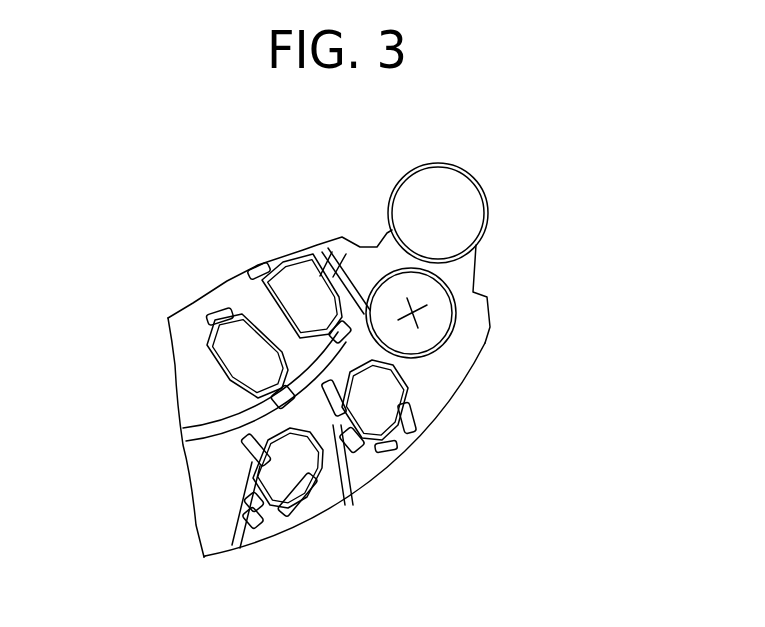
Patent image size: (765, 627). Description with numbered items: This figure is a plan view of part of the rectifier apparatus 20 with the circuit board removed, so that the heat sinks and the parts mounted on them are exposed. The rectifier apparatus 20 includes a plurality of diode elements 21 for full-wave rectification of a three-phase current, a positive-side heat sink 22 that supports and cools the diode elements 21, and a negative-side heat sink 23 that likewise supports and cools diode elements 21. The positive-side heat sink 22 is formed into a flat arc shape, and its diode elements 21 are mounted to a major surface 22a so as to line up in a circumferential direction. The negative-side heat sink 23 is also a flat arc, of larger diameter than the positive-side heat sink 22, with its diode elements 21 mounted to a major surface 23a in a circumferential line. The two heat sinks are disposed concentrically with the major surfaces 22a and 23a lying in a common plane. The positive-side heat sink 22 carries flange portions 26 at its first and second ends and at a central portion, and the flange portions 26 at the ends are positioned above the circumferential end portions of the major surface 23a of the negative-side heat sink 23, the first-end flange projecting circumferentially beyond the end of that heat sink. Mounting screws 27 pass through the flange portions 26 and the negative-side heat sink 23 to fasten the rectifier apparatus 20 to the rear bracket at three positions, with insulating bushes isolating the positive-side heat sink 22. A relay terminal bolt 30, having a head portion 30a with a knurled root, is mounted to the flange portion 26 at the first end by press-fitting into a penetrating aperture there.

The rectifier apparatus 20 is at (167, 175).
The diode element 21 is at (280, 284).
The positive-side heat sink 22 is at (197, 305).
The major surface 22a is at (190, 344).
The negative-side heat sink 23 is at (433, 423).
The major surface 23a is at (210, 520).
The flange portion 26 is at (368, 243).
The mounting screw 27 is at (432, 327).
The relay terminal bolt 30 is at (470, 217).
The head portion 30a is at (467, 193).